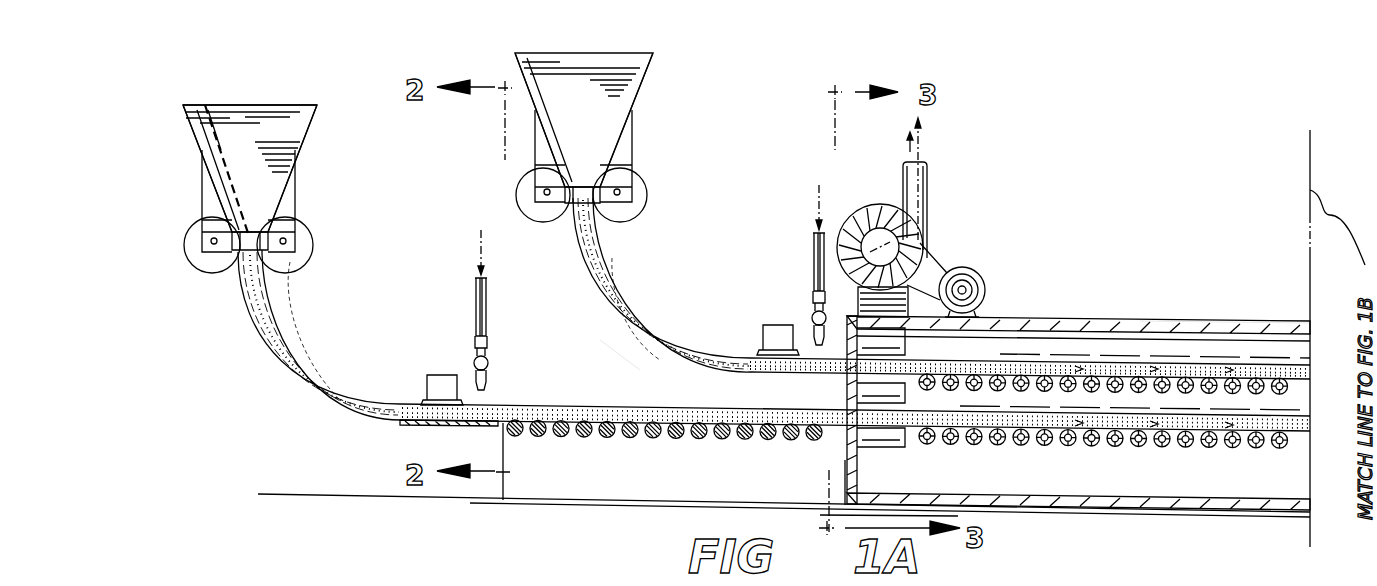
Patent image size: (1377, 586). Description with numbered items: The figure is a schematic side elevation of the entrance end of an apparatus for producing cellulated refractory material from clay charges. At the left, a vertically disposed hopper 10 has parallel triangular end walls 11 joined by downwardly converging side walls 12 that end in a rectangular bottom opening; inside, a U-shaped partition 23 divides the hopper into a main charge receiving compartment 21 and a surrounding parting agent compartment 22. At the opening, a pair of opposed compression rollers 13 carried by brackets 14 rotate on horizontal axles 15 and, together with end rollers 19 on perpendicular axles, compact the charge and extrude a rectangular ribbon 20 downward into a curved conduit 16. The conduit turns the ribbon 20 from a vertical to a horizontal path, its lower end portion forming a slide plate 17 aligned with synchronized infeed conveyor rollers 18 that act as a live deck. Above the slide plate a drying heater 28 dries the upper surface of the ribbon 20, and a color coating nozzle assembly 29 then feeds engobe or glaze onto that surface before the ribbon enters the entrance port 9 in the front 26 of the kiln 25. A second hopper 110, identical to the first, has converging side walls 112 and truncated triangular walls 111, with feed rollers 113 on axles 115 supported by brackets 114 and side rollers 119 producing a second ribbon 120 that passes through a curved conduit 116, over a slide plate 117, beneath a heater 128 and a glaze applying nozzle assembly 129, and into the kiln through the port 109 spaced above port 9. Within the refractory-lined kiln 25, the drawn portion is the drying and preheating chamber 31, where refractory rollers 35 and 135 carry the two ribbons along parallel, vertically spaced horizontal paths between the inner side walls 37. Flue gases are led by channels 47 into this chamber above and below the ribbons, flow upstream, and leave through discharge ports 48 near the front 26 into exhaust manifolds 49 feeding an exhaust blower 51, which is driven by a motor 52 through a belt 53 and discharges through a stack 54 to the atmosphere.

The entrance port 9 is at (848, 375).
The hopper 10 is at (270, 103).
The end walls 11 is at (303, 125).
The side walls 12 is at (316, 106).
The compression rollers 13 is at (186, 240).
The brackets 14 is at (201, 180).
The axles 15 is at (211, 243).
The curved conduit 16 is at (320, 385).
The slide plate 17 is at (340, 402).
The infeed conveyor rollers 18 is at (590, 436).
The end rollers 19 is at (245, 250).
The ribbon 20 is at (290, 350).
The main charge receiving compartment 21 is at (310, 104).
The parting agent compartment 22 is at (210, 112).
The partition 23 is at (226, 110).
The kiln 25 is at (1070, 320).
The front 26 is at (846, 462).
The drying heater 28 is at (441, 380).
The color coating nozzle assembly 29 is at (488, 370).
The drying and preheating chamber 31 is at (1145, 336).
The rollers 35 is at (1180, 446).
The inner side walls 37 is at (1145, 490).
The channels 47 is at (980, 328).
The discharge ports 48 is at (900, 345).
The exhaust manifolds 49 is at (860, 300).
The exhaust blower 51 is at (905, 243).
The motor 52 is at (984, 280).
The belt 53 is at (945, 268).
The stack 54 is at (928, 198).
The port 109 is at (812, 373).
The second hopper 110 is at (585, 55).
The truncated triangular walls 111 is at (632, 90).
The side walls 112 is at (640, 60).
The feed rollers 113 is at (518, 198).
The brackets 114 is at (538, 145).
The axles 115 is at (546, 195).
The curved conduit 116 is at (655, 328).
The slide plate 117 is at (630, 335).
The side rollers 119 is at (575, 205).
The second ribbon 120 is at (610, 293).
The heater 128 is at (779, 330).
The glaze applying nozzle assembly 129 is at (813, 300).
The rollers 135 is at (1185, 390).